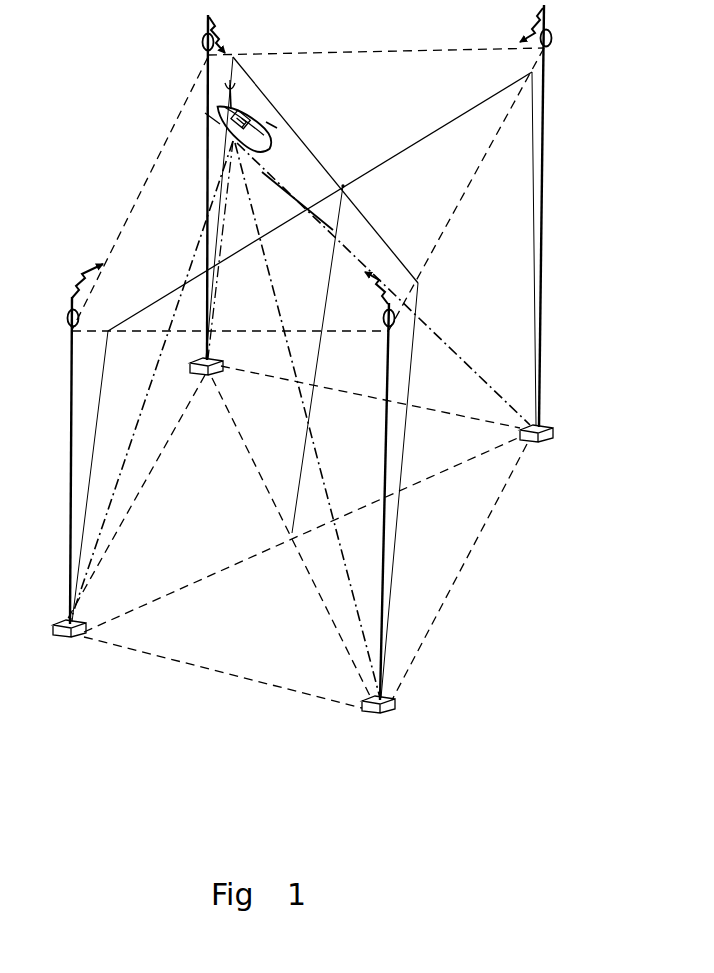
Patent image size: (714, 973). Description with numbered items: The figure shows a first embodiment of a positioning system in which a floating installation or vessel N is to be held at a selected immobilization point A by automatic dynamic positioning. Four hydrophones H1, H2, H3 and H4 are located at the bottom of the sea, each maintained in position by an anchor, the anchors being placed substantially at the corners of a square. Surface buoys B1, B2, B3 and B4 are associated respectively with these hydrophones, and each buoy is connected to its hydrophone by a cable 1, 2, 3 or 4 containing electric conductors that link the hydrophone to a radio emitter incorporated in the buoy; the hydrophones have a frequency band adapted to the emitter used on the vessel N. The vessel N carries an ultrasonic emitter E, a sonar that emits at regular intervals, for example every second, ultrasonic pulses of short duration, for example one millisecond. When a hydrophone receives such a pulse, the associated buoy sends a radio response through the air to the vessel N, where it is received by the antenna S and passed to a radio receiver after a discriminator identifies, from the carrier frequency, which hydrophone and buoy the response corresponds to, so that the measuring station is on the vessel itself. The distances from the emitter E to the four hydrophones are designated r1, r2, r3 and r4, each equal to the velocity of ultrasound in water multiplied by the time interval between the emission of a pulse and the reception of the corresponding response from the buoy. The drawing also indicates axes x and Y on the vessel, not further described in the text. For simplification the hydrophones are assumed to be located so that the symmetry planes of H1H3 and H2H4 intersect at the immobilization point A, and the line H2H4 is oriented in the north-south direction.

The cable 1 is at (206, 229).
The cable 2 is at (70, 492).
The cable 3 is at (386, 452).
The cable 4 is at (546, 250).
The surface buoy B1 is at (203, 42).
The surface buoy B2 is at (68, 320).
The surface buoy B3 is at (384, 320).
The surface buoy B4 is at (551, 40).
The hydrophone H1 is at (212, 376).
The hydrophone H2 is at (68, 638).
The hydrophone H3 is at (390, 712).
The hydrophone H4 is at (540, 442).
The distance EH1 r1 is at (233, 232).
The distance EH2 r2 is at (144, 400).
The distance EH3 r3 is at (290, 327).
The distance EH4 r4 is at (352, 256).
The ultrasonic emitter E is at (243, 128).
The antenna S is at (223, 90).
The vessel N is at (204, 114).
The vessel transverse axis Y is at (265, 119).
The vessel longitudinal axis x is at (297, 201).
The immobilization point A is at (343, 185).